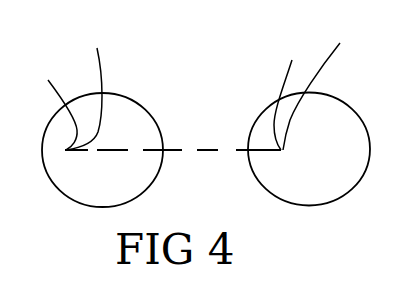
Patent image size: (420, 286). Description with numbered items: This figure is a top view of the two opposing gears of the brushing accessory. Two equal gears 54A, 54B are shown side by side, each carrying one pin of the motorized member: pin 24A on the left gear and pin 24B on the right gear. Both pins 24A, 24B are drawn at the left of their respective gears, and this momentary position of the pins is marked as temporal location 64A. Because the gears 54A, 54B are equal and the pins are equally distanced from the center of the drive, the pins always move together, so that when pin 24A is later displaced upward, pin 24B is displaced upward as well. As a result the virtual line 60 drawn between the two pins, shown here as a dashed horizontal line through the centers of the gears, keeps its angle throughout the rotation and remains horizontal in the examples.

The pin of motorized member 24A is at (82, 86).
The pin of motorized member 24B is at (290, 94).
The gear 54A is at (121, 117).
The gear 54B is at (338, 137).
The virtual line 60 is at (205, 143).
The temporal location of pin 64A is at (190, 84).